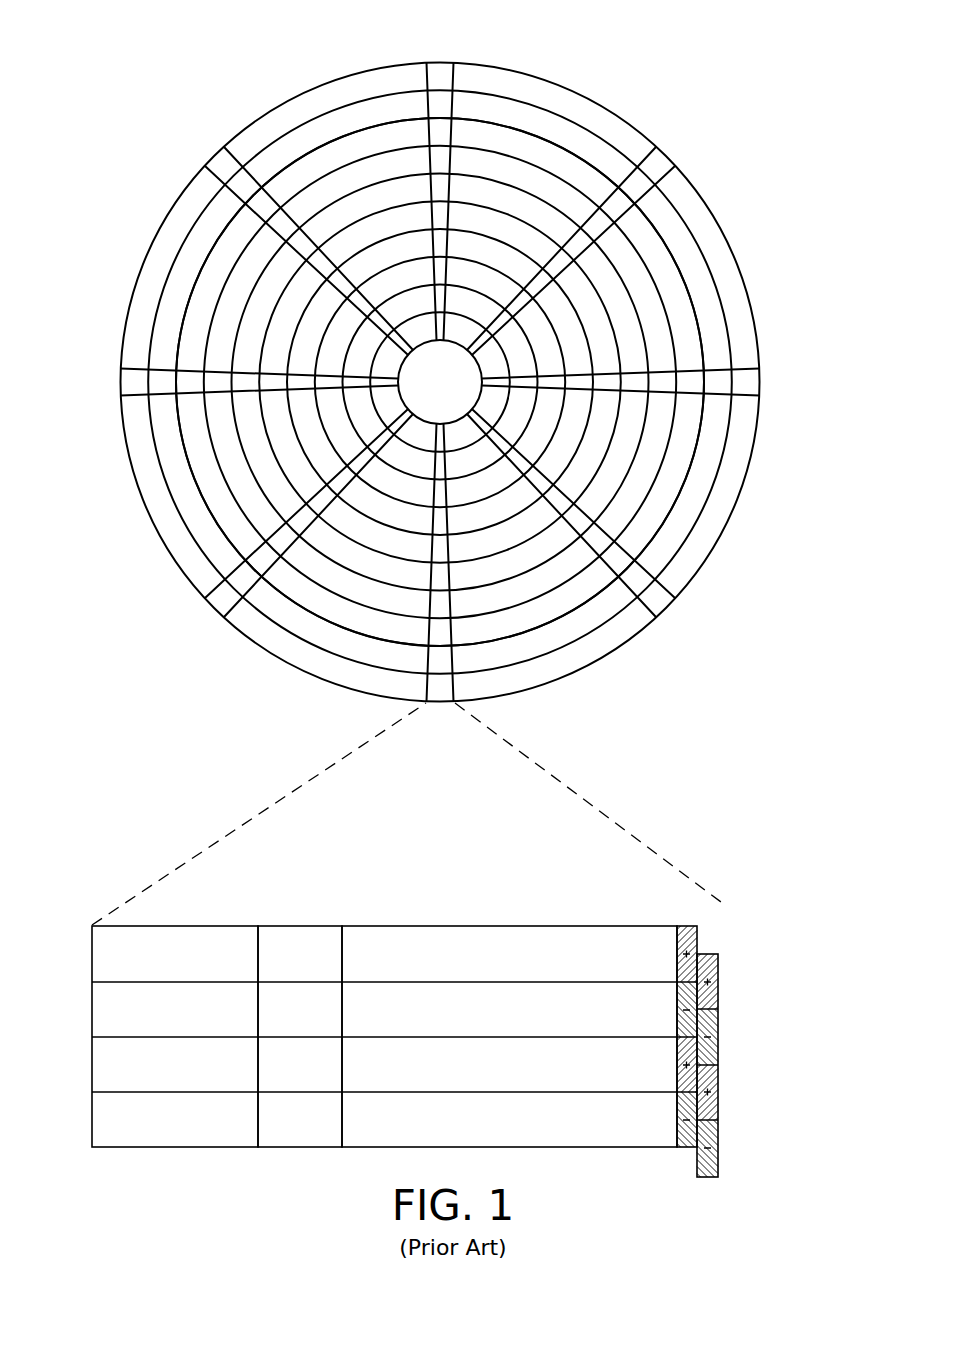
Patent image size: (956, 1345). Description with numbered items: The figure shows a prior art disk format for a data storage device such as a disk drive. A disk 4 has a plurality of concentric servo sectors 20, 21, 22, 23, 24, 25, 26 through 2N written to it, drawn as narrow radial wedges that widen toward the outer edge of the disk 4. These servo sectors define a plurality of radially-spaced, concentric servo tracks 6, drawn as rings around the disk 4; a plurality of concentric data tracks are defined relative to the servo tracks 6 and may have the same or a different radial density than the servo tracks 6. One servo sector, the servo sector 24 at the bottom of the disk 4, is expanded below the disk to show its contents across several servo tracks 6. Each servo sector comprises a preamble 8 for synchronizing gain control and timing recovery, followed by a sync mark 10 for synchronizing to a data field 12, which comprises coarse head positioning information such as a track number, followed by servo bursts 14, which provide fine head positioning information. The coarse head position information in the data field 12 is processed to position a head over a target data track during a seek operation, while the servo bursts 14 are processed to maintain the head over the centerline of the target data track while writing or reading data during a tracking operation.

The disk 4 is at (196, 61).
The servo track 6 is at (548, 128).
The servo sector 20 is at (441, 72).
The servo sector 21 is at (660, 162).
The servo sector 22 is at (752, 383).
The servo sector 23 is at (658, 602).
The servo sector 24 is at (294, 772).
The servo sector 25 is at (218, 605).
The servo sector 26 is at (125, 382).
The servo sector 2N is at (220, 160).
The preamble 8 is at (183, 923).
The sync mark 10 is at (302, 923).
The data field 12 is at (496, 923).
The servo bursts 14 is at (724, 918).